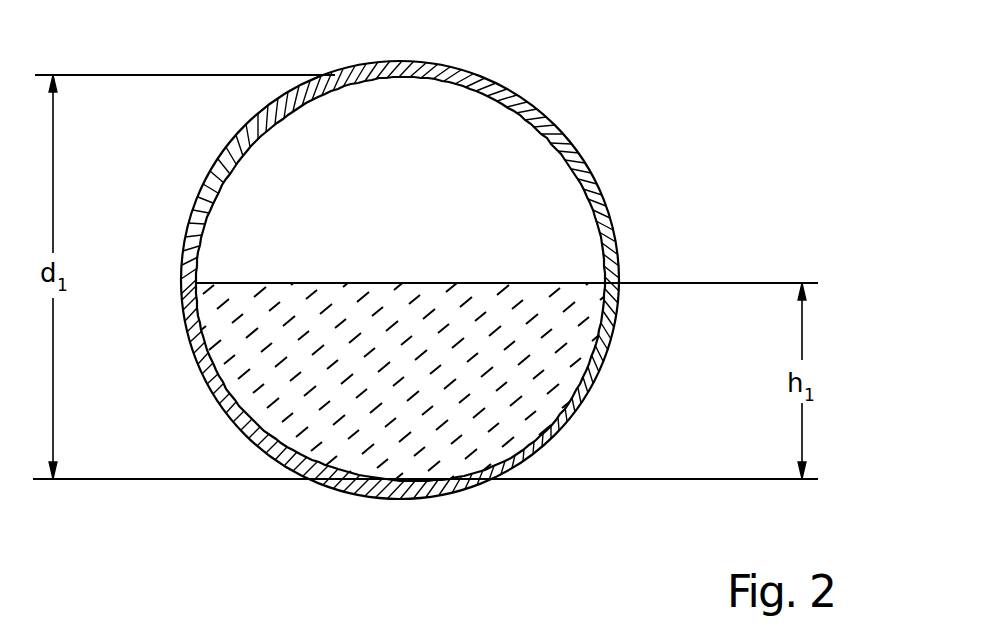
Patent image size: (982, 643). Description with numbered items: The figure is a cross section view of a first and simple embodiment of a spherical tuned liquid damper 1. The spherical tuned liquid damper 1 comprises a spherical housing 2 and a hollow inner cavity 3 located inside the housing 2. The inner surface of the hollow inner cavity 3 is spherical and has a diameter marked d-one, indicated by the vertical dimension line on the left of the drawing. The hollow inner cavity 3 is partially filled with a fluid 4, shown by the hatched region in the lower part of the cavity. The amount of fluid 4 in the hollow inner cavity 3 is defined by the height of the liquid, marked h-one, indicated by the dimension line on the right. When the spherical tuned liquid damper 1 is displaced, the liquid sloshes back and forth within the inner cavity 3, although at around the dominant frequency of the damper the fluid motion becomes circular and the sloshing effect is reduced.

The spherical tuned liquid damper 1 is at (592, 77).
The spherical housing 2 is at (574, 146).
The hollow inner cavity 3 is at (183, 255).
The fluid 4 is at (563, 282).